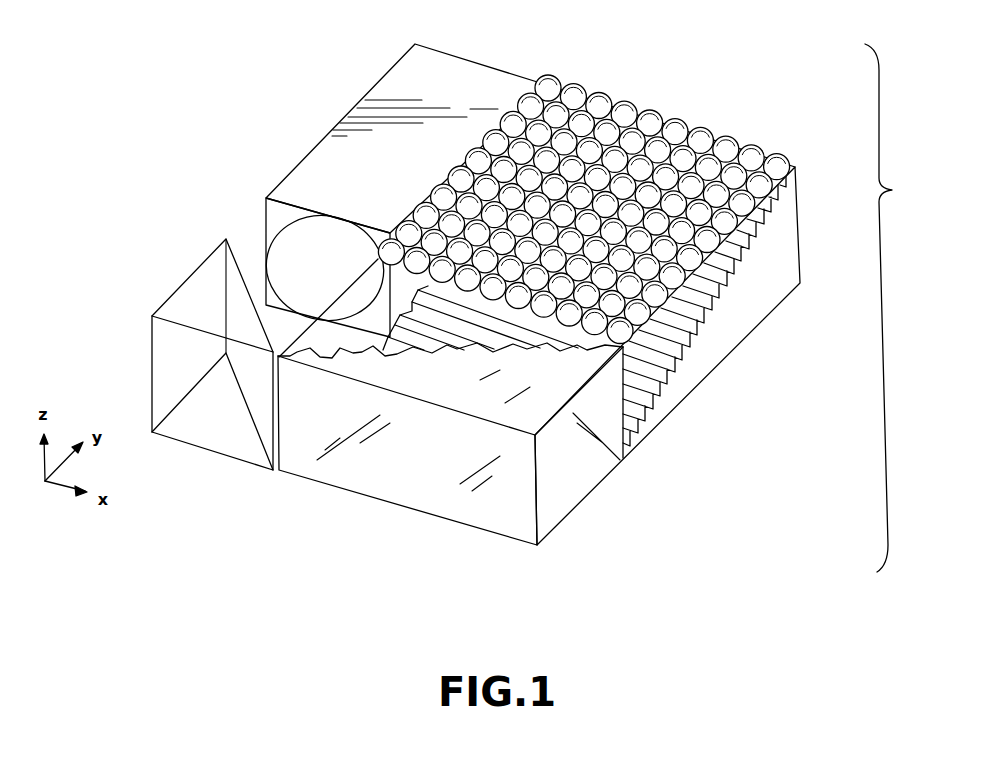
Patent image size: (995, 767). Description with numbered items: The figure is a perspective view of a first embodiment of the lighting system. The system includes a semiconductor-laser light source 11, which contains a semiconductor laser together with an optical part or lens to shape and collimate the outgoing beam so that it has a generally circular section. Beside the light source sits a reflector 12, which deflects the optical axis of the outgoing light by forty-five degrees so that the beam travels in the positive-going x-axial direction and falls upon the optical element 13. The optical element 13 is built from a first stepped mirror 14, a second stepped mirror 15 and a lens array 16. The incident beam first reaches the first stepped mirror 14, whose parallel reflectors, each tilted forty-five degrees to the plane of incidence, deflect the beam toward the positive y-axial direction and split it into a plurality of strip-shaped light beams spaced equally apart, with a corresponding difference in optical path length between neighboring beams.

The semiconductor-laser light source 11 is at (332, 157).
The reflector 12 is at (262, 417).
The optical element 13 is at (896, 308).
The first stepped mirror 14 is at (585, 460).
The second stepped mirror 15 is at (668, 378).
The lens array 16 is at (655, 123).